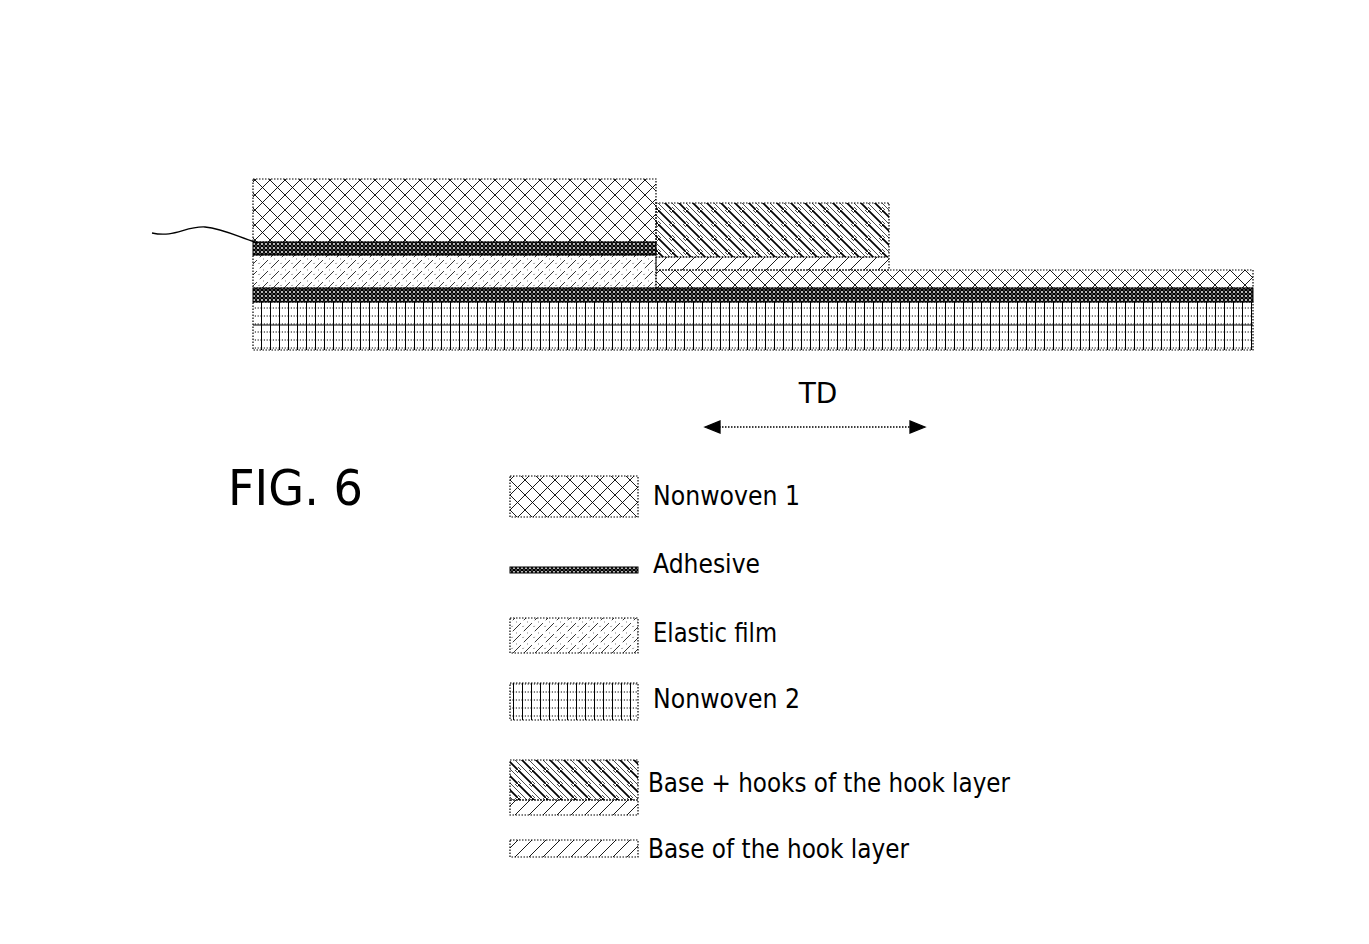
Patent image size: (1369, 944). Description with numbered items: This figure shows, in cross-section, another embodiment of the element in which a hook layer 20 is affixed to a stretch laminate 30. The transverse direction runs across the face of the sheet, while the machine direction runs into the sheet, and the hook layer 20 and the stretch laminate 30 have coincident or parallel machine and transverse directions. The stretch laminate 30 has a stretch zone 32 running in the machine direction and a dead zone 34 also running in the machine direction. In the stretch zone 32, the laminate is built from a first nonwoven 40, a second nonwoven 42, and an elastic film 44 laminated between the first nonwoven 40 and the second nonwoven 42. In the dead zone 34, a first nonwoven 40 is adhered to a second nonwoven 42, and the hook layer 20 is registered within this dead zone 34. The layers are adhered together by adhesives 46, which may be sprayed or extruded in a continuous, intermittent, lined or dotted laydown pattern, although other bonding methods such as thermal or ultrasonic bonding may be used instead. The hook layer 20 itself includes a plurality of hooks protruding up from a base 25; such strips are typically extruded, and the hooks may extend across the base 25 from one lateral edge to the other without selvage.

The hook layer 20 is at (795, 194).
The base 25 is at (697, 253).
The stretch laminate 30 is at (452, 176).
The stretch zone 32 is at (283, 122).
The dead zone 34 is at (1254, 110).
The first nonwoven 40 is at (287, 207).
The second nonwoven 42 is at (288, 317).
The elastic film 44 is at (253, 263).
The adhesive 46 is at (253, 292).